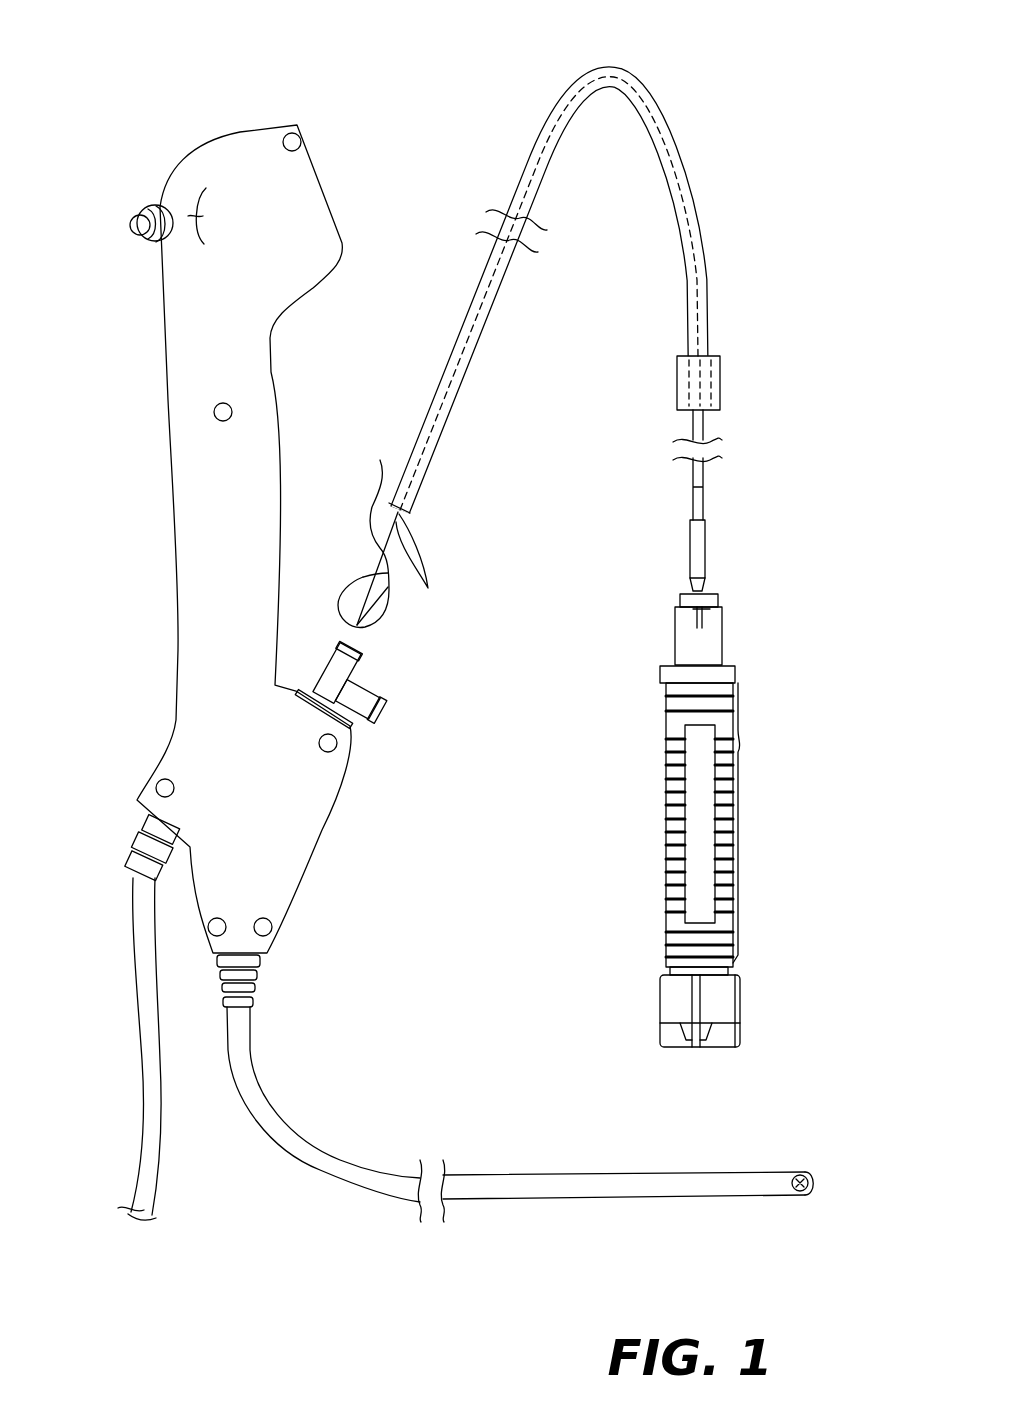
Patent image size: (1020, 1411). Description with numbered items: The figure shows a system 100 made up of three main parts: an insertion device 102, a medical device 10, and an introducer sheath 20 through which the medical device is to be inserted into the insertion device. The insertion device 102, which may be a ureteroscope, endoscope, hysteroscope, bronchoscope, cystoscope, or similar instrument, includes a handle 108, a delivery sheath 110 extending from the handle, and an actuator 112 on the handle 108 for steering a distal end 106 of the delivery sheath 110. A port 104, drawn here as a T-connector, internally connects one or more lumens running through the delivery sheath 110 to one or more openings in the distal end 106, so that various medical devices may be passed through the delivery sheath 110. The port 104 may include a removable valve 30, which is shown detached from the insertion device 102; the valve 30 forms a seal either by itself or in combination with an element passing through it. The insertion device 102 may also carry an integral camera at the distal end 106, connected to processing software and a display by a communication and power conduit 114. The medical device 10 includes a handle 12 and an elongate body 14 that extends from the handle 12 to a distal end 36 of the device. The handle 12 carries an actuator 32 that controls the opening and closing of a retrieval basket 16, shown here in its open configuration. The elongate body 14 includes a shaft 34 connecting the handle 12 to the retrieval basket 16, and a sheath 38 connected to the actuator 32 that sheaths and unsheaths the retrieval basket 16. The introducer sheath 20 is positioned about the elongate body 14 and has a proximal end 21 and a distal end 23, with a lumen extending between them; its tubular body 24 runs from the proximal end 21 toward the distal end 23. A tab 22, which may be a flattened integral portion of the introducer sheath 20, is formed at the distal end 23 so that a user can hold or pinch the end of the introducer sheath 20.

The medical device 10 is at (867, 685).
The handle 12 is at (735, 920).
The elongate body 14 is at (721, 479).
The retrieval basket 16 is at (357, 623).
The introducer sheath 20 is at (613, 72).
The proximal end 21 is at (667, 367).
The tab 22 is at (428, 562).
The distal end 23 is at (421, 509).
The catheter shaft 24 is at (657, 113).
The removable valve 30 is at (722, 390).
The actuator 32 is at (740, 740).
The shaft 34 is at (380, 460).
The distal end 36 is at (414, 612).
The sheath 38 is at (703, 503).
The system 100 is at (363, 112).
The insertion device 102 is at (138, 536).
The port 104 is at (362, 670).
The distal end 106 is at (808, 1194).
The handle 108 is at (183, 400).
The delivery sheath 110 is at (513, 1184).
The actuator 112 is at (131, 219).
The communication and power conduit 114 is at (150, 1070).